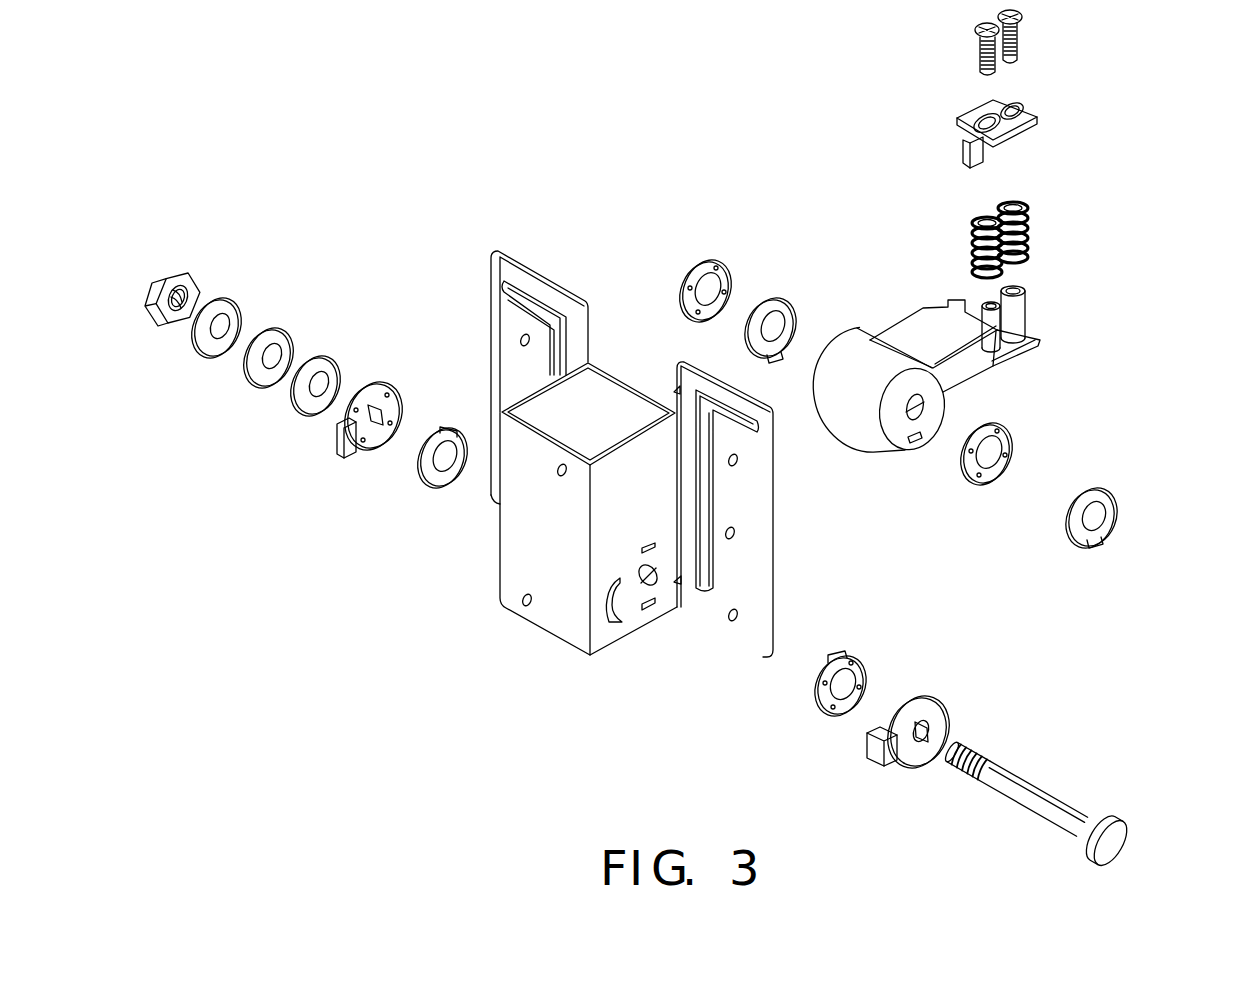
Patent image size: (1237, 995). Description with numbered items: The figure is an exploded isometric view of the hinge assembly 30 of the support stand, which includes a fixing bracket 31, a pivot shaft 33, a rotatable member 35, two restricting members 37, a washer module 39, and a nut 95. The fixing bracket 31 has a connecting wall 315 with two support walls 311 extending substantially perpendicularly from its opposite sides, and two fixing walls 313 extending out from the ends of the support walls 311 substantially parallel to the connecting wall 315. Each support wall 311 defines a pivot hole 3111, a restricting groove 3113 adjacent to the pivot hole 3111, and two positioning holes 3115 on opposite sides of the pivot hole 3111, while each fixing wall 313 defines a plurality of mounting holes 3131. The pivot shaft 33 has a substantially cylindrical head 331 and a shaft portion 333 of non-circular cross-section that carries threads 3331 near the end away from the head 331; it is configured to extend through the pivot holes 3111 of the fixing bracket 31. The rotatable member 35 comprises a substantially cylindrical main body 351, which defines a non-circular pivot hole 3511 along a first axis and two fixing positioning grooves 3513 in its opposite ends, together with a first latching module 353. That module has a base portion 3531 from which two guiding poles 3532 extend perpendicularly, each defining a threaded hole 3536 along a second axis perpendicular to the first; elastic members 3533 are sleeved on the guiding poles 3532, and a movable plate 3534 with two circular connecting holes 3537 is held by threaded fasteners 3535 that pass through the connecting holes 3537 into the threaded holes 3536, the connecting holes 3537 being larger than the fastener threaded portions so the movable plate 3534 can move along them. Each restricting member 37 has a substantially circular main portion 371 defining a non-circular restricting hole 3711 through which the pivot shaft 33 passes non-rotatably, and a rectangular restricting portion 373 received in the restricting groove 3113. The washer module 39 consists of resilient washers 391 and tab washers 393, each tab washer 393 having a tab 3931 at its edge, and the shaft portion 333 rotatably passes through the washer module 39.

The hinge assembly 30 is at (200, 73).
The fixing bracket 31 is at (480, 202).
The support walls 311 is at (468, 362).
The fixing walls 313 is at (749, 492).
The connecting wall 315 is at (518, 563).
The pivot hole 3111 is at (654, 582).
The restricting groove 3113 is at (622, 620).
The positioning holes 3115 is at (648, 612).
The mounting holes 3131 is at (741, 612).
The pivot shaft 33 is at (1205, 810).
The head 331 is at (1118, 832).
The shaft portion 333 is at (1074, 812).
The threads 3331 is at (978, 755).
The rotatable member 35 is at (865, 193).
The main body 351 is at (847, 345).
The pivot hole 3511 is at (928, 413).
The fixing positioning grooves 3513 is at (916, 442).
The first latching module 353 is at (1175, 350).
The base portion 3531 is at (1034, 340).
The guiding poles 3532 is at (1014, 318).
The elastic members 3533 is at (1028, 220).
The movable plate 3534 is at (1028, 123).
The threaded fasteners 3535 is at (1018, 50).
The threaded hole 3536 is at (1021, 293).
The connecting holes 3537 is at (1014, 107).
The restricting members 37 is at (910, 838).
The main portion 371 is at (913, 755).
The restricting hole 3711 is at (934, 727).
The restricting portion 373 is at (870, 743).
The washer module 39 is at (328, 550).
The resilient washers 391 is at (313, 417).
The tab washers 393 is at (362, 517).
The tab 3931 is at (1107, 538).
The nut 95 is at (161, 282).